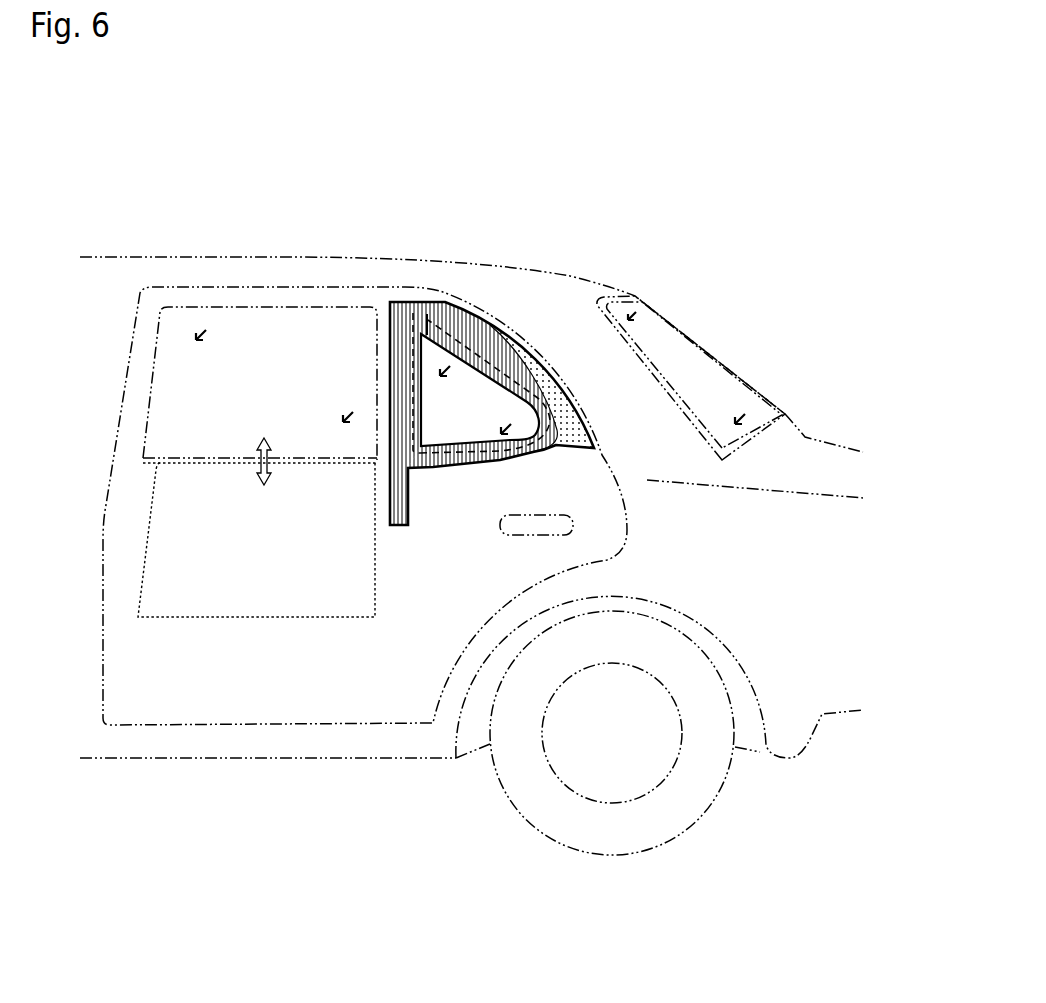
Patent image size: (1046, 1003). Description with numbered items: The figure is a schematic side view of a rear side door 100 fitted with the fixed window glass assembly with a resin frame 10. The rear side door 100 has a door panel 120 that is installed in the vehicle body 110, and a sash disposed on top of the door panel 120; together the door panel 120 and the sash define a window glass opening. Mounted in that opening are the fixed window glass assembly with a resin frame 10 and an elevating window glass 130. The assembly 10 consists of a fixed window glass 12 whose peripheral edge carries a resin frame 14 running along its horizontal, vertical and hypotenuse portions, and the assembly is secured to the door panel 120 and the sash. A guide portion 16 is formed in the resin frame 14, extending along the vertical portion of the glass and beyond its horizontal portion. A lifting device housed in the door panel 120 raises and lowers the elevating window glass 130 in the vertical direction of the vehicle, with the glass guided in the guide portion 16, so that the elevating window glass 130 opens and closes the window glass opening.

The rear side door 100 is at (531, 142).
The vehicle body 110 is at (308, 258).
The door panel 120 is at (265, 712).
The elevating window glass 130 is at (284, 397).
The fixed window glass assembly with a resin frame 10 is at (472, 295).
The resin frame 14 is at (507, 328).
The fixed window glass 12 is at (481, 414).
The guide portion 16 is at (397, 488).